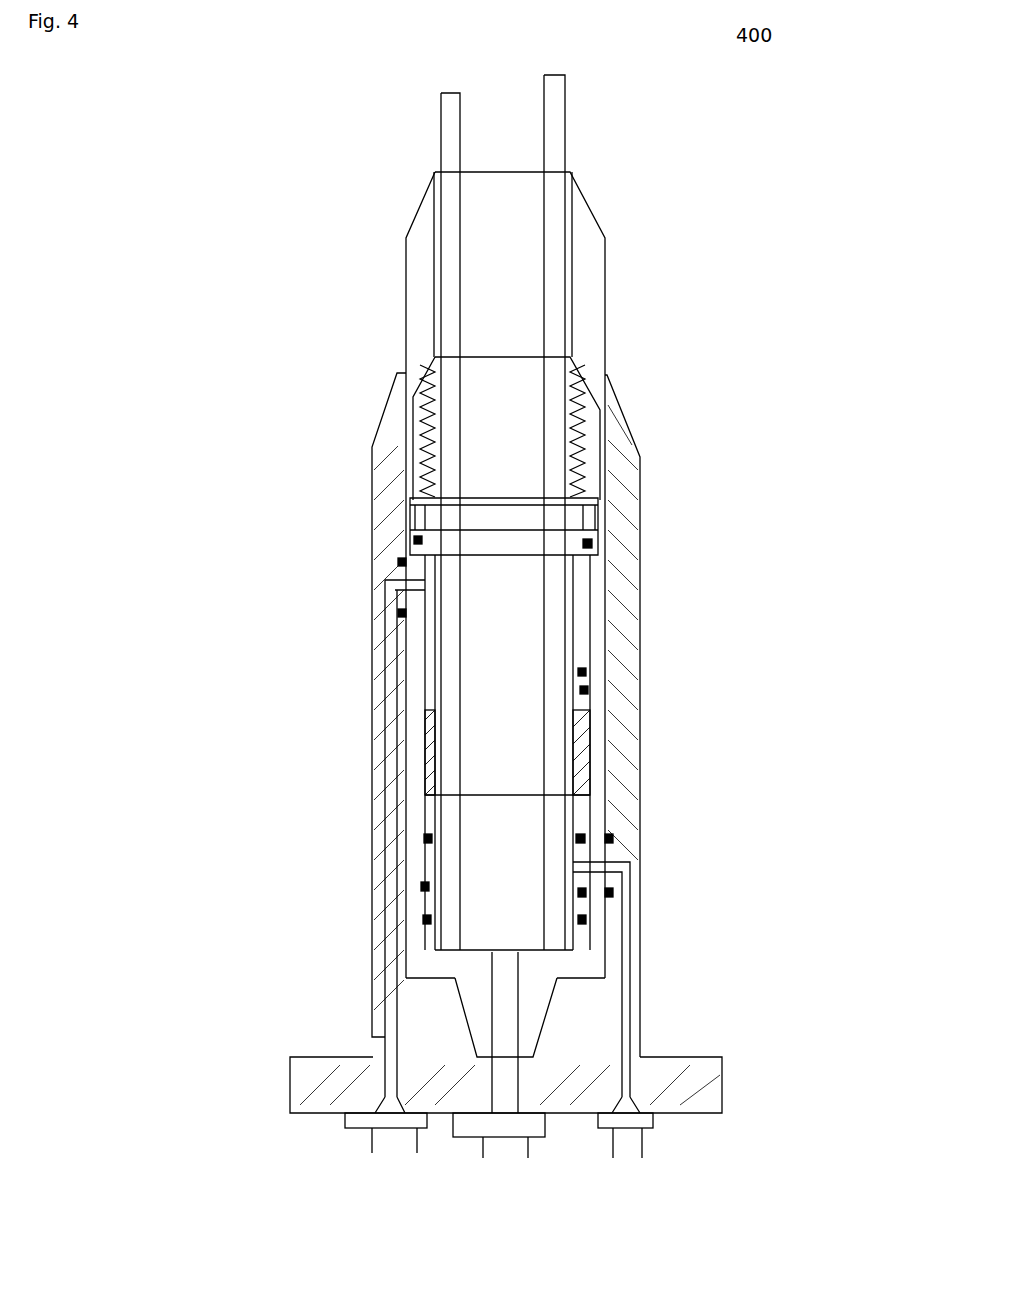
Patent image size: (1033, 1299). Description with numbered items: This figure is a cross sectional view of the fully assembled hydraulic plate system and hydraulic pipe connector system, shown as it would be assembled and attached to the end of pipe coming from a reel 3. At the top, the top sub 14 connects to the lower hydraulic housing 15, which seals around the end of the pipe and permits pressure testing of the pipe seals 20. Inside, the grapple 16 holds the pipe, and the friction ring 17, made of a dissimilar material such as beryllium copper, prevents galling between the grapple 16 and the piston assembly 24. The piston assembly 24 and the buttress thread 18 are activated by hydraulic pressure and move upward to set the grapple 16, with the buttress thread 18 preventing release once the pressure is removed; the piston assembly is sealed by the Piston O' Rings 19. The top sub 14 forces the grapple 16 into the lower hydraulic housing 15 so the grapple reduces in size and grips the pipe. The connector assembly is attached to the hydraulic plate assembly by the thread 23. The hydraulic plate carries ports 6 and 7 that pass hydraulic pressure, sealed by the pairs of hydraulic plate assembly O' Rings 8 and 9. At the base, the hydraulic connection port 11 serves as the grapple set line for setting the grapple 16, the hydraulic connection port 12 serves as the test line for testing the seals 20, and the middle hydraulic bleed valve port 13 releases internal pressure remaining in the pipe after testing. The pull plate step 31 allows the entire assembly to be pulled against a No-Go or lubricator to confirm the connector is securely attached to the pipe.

The reel 3 is at (572, 127).
The top sub 14 is at (608, 292).
The grapple 16 is at (427, 432).
The friction ring 17 is at (598, 509).
The hydraulic plate assembly O' Rings 8 is at (396, 604).
The Piston O' Rings 19 is at (590, 668).
The piston assembly 24 is at (590, 693).
The port 6 is at (386, 686).
The buttress thread 18 is at (598, 762).
The pipe seal 20 is at (420, 913).
The hydraulic plate assembly O' Rings 9 is at (616, 884).
The port 7 is at (634, 905).
The lower hydraulic housing 15 is at (606, 970).
The thread 23 is at (462, 1020).
The hydraulic bleed valve port 13 is at (476, 1160).
The pull plate step 31 is at (686, 1046).
The hydraulic connection port 11 is at (375, 1145).
The hydraulic connection port 12 is at (646, 1143).